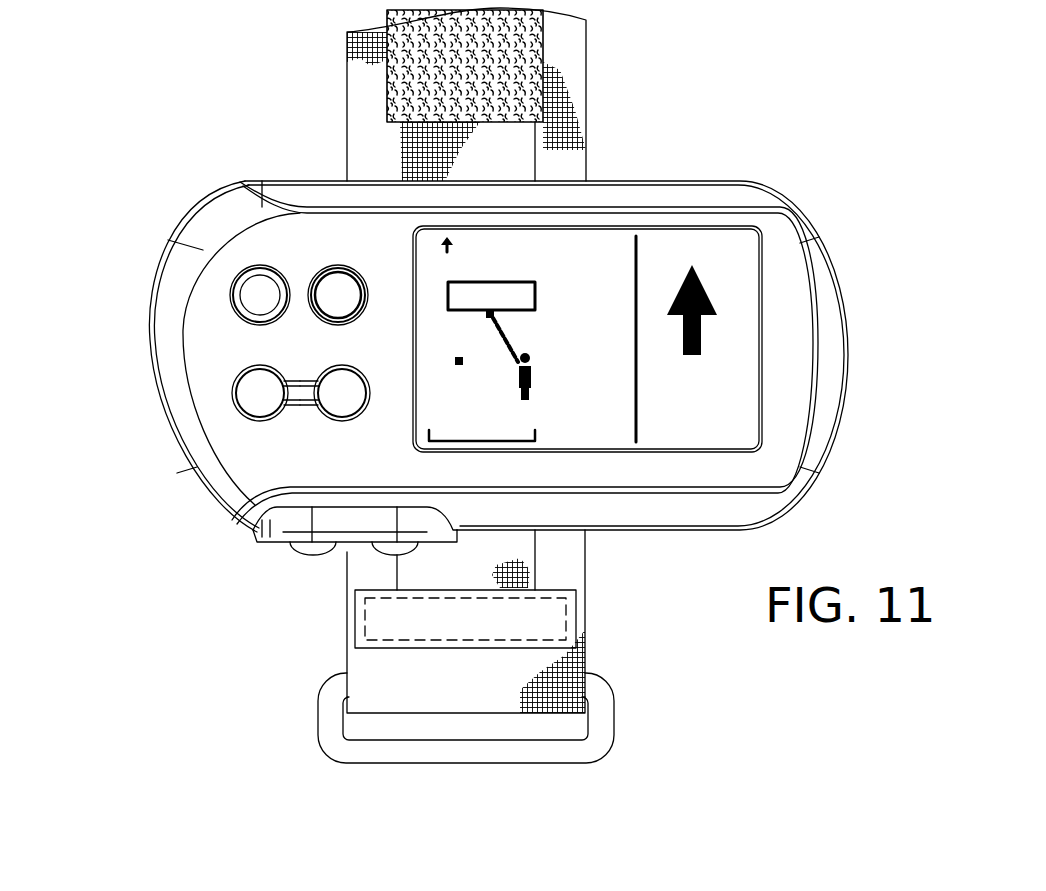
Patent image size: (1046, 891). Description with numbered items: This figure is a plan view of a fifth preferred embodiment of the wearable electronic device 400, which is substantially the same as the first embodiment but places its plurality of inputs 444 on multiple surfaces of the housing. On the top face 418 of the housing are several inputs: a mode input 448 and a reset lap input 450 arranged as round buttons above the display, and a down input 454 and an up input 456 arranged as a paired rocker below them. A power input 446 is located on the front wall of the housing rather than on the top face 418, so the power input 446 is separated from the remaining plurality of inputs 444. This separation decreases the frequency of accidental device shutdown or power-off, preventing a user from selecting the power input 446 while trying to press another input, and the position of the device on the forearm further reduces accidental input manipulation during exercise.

The portable electronic device 400 is at (148, 76).
The top face 418 is at (228, 346).
The plurality of inputs 444 is at (155, 602).
The power input 446 is at (290, 553).
The mode input 448 is at (323, 283).
The reset lap input 450 is at (257, 293).
The down input 454 is at (257, 402).
The up input 456 is at (333, 407).